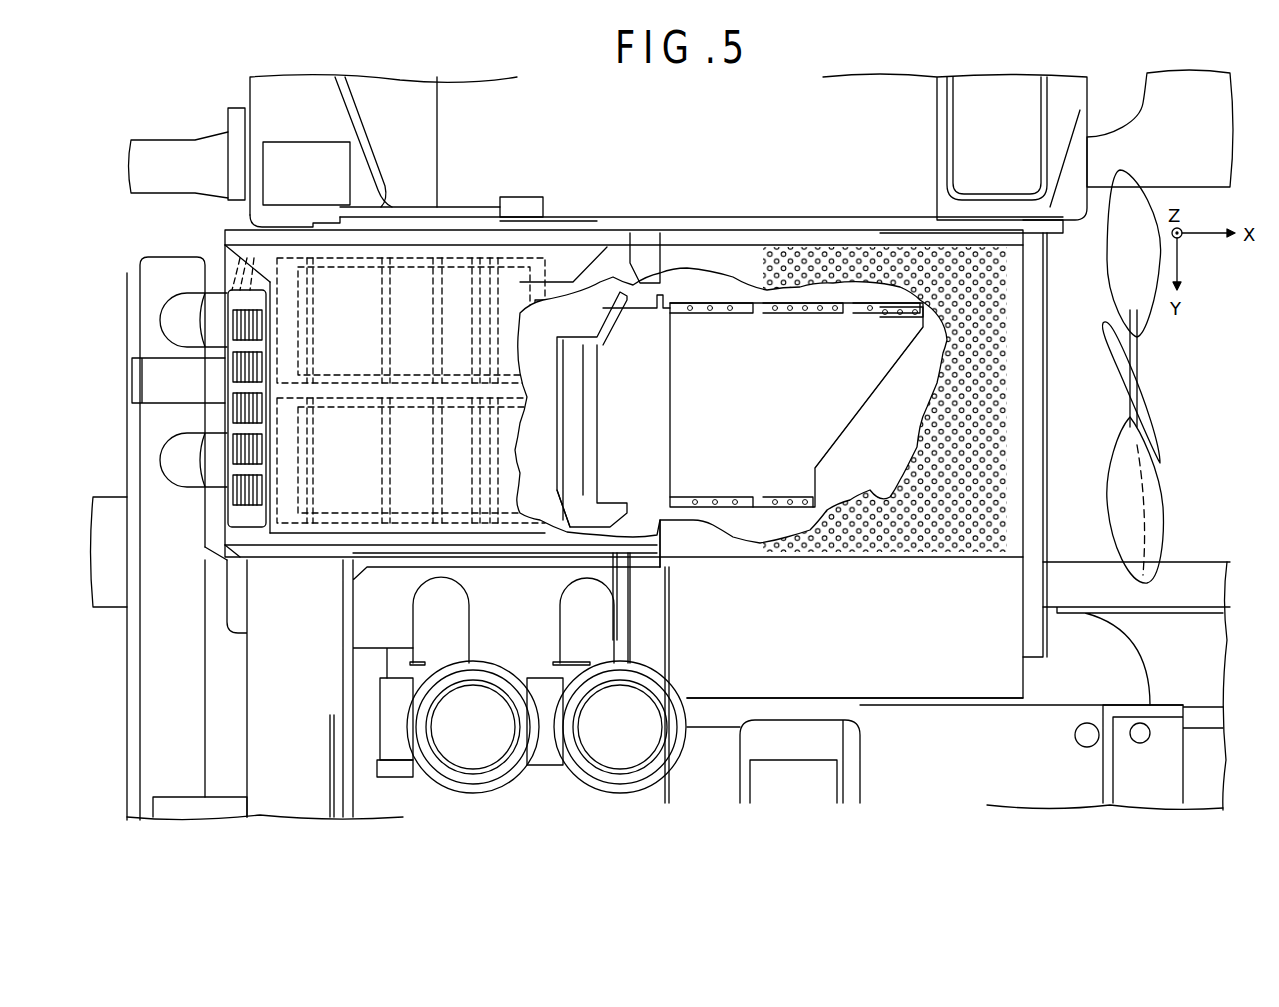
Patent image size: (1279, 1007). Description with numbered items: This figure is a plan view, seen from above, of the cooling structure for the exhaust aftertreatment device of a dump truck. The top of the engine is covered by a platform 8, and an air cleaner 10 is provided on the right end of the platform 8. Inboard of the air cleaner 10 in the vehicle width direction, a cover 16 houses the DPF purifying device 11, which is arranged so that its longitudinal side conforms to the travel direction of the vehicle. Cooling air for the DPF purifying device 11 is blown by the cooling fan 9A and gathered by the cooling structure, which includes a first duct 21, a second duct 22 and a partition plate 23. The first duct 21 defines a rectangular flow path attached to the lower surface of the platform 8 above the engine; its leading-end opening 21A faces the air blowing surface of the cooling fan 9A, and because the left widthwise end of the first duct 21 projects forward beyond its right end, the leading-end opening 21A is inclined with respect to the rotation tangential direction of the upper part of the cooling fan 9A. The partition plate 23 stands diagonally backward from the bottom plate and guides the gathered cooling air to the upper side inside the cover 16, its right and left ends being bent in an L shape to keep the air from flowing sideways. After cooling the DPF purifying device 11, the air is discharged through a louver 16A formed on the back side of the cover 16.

The platform 8 is at (747, 260).
The cooling fan 9A is at (1137, 372).
The air cleaner 10 is at (482, 750).
The DPF purifying device 11 is at (455, 423).
The cover 16 is at (550, 260).
The louver 16A is at (240, 412).
The first duct 21 is at (825, 337).
The leading-end opening 21A is at (880, 432).
The second duct 22 is at (641, 337).
The partition plate 23 is at (567, 357).